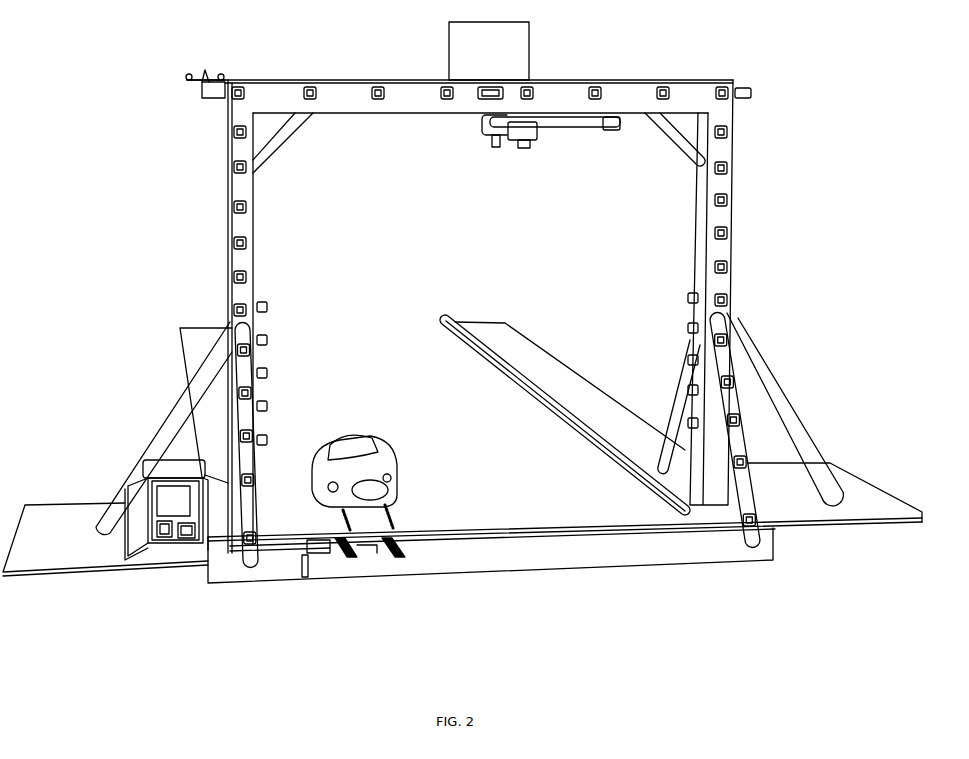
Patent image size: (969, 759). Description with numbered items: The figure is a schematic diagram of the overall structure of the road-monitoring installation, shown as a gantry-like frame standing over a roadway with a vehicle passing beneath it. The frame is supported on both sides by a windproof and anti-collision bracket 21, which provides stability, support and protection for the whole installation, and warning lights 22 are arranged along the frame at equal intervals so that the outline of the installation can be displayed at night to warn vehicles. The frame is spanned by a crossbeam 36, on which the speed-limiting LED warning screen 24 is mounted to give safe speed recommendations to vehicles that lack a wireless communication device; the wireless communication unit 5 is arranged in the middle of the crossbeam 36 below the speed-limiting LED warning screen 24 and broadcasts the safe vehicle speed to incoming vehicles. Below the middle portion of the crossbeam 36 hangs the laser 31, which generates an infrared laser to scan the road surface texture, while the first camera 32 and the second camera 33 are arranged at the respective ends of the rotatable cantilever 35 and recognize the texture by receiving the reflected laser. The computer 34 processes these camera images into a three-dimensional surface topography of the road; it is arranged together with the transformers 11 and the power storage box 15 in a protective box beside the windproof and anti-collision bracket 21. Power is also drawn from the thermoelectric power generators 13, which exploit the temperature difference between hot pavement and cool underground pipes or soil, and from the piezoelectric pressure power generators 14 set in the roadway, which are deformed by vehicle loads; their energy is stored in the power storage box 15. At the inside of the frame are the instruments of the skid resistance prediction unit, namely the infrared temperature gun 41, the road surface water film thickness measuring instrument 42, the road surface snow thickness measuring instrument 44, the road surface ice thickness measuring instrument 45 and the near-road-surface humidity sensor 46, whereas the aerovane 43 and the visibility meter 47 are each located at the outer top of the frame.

The wireless communication unit 5 is at (503, 90).
The transformer 11 is at (172, 489).
The thermoelectric power generator 13 is at (318, 553).
The pressure power generator 14 is at (398, 556).
The power storage box 15 is at (162, 540).
The windproof and anti-collision bracket 21 is at (240, 293).
The warning light 22 is at (228, 242).
The speed-limiting LED warning screen 24 is at (458, 52).
The laser 31 is at (494, 144).
The first camera 32 is at (523, 144).
The second camera 33 is at (608, 128).
The computer 34 is at (185, 540).
The cantilever 35 is at (568, 123).
The crossbeam 36 is at (423, 98).
The infrared temperature gun 41 is at (693, 298).
The road surface water film thickness measuring instrument 42 is at (262, 340).
The aerovane 43 is at (203, 90).
The road surface snow thickness measuring instrument 44 is at (693, 360).
The road surface ice thickness measuring instrument 45 is at (262, 406).
The near-road-surface humidity sensor 46 is at (693, 423).
The visibility meter 47 is at (752, 93).